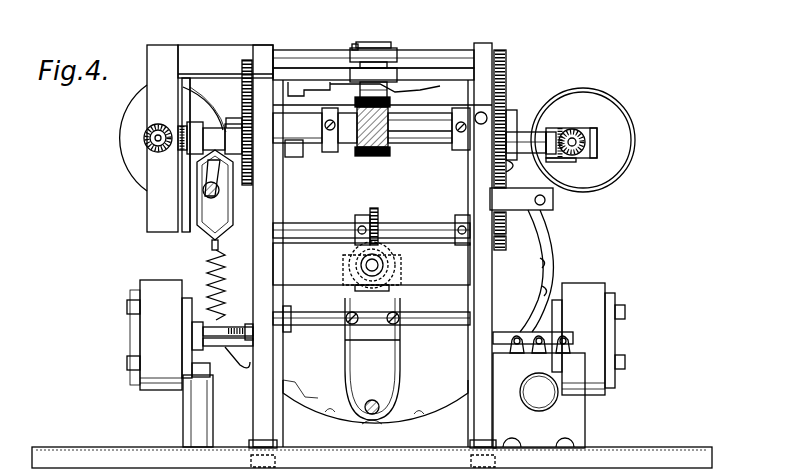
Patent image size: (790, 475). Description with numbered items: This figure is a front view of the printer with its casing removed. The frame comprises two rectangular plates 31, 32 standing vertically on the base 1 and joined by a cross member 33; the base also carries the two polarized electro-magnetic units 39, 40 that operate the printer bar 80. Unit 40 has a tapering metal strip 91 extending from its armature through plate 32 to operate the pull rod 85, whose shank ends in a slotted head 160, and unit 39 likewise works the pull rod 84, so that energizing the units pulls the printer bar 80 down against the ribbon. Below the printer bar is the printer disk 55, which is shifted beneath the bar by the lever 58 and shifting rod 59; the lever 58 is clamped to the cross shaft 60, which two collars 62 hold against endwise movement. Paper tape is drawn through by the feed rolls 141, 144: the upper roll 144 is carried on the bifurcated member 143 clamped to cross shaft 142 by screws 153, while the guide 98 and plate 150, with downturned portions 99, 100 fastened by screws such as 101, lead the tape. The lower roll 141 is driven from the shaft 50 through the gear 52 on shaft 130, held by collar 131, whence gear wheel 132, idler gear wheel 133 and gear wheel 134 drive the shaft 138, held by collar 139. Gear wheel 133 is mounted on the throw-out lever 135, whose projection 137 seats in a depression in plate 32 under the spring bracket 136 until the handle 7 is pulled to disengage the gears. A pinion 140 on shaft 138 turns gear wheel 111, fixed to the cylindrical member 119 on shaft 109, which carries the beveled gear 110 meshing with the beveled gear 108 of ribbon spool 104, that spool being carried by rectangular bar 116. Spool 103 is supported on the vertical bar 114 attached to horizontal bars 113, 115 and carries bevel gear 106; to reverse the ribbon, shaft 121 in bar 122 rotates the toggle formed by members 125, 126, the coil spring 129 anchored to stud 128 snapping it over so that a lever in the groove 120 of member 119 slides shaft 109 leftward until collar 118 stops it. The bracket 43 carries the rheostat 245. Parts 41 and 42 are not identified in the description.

The base 1 is at (104, 448).
The extension lever or handle 7 is at (553, 201).
The rectangular plate 31 is at (253, 410).
The rectangular plate 32 is at (474, 420).
The cross member 33 is at (450, 285).
The polarized electro-magnetic unit 39 is at (146, 386).
The polarized electro-magnetic unit 40 is at (605, 320).
The sector plate 41 is at (293, 386).
The sector plate portion 42 is at (432, 353).
The bracket 43 is at (585, 410).
The shaft 50 is at (388, 265).
The gear 52 is at (376, 216).
The printer disk 55 is at (312, 400).
The lever 58 is at (396, 376).
The shifting rod 59 is at (380, 407).
The cross shaft 60 is at (322, 325).
The collars 62 is at (287, 310).
The printer bar 80 is at (420, 90).
The pull rod 84 is at (285, 189).
The pull rod 85 is at (468, 178).
The tapering metal strip 91 is at (536, 290).
The guide 98 is at (318, 88).
The downturned portion 99 is at (322, 146).
The downturned portion 100 is at (498, 160).
The screw 101 is at (508, 115).
The spool 103 is at (128, 112).
The spool 104 is at (636, 128).
The bevel gear 106 is at (145, 140).
The beveled gear 108 is at (580, 131).
The shaft 109 is at (404, 143).
The beveled gear 110 is at (556, 128).
The gear wheel 111 is at (247, 60).
The horizontal bar 113 is at (204, 50).
The vertical rectangular bar 114 is at (160, 52).
The horizontal bar 115 is at (192, 234).
The rectangular bar 116 is at (588, 158).
The collar 118 is at (303, 150).
The cylindrical member 119 is at (182, 125).
The groove 120 is at (214, 132).
The shaft 121 is at (197, 190).
The horizontal rectangular bar 122 is at (222, 233).
The upright member 125 is at (200, 168).
The toggle member 126 is at (190, 212).
The stud 128 is at (235, 326).
The coil spring 129 is at (207, 266).
The shaft 130 is at (320, 228).
The collar 131 is at (455, 222).
The small gear wheel 132 is at (506, 246).
The small gear wheel 133 is at (506, 228).
The gear wheel 134 is at (502, 52).
The throw-out lever 135 is at (540, 209).
The bracket 136 is at (538, 272).
The projection 137 is at (486, 194).
The shaft 138 is at (418, 143).
The collar 139 is at (456, 150).
The pinion 140 is at (231, 118).
The feed roll 141 is at (372, 156).
The cross shaft 142 is at (452, 54).
The member 143 is at (380, 55).
The feed roll 144 is at (375, 44).
The plate 150 is at (502, 97).
The screws 153 is at (354, 45).
The head 160 is at (457, 370).
The rheostat 245 is at (535, 353).